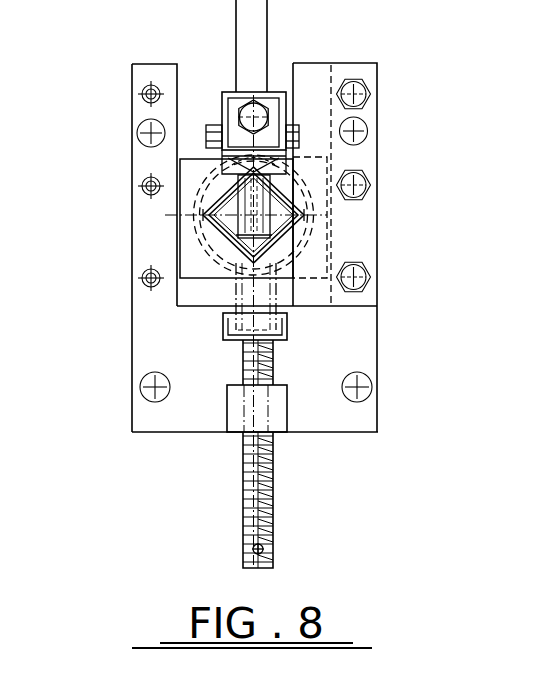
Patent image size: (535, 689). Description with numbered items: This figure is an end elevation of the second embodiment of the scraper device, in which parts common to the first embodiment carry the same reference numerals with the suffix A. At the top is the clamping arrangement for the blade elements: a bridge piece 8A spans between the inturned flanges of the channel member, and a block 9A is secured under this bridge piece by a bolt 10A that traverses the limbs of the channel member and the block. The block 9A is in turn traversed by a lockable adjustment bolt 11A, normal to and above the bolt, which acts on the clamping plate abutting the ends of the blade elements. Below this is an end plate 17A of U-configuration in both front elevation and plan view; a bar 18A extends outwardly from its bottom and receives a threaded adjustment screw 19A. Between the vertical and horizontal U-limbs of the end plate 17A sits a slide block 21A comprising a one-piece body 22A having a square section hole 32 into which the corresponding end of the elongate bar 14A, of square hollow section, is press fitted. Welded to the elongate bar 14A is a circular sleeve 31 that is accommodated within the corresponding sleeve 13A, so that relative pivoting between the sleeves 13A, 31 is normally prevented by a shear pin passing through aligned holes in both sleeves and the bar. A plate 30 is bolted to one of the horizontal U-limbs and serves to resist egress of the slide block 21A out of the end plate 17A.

The bridge piece 8A is at (248, 97).
The block 9A is at (235, 100).
The bolt 10A is at (218, 128).
The lockable adjustment bolt 11A is at (263, 118).
The sleeve 13A is at (298, 180).
The elongate bar 14A is at (277, 227).
The end plate 17A is at (381, 406).
The bar 18A is at (273, 420).
The threaded adjustment screw 19A is at (253, 502).
The slide block 21A is at (193, 155).
The one-piece body 22A is at (193, 190).
The plate 30 is at (302, 80).
The circular sleeve 31 is at (290, 196).
The square section hole 32 is at (222, 237).